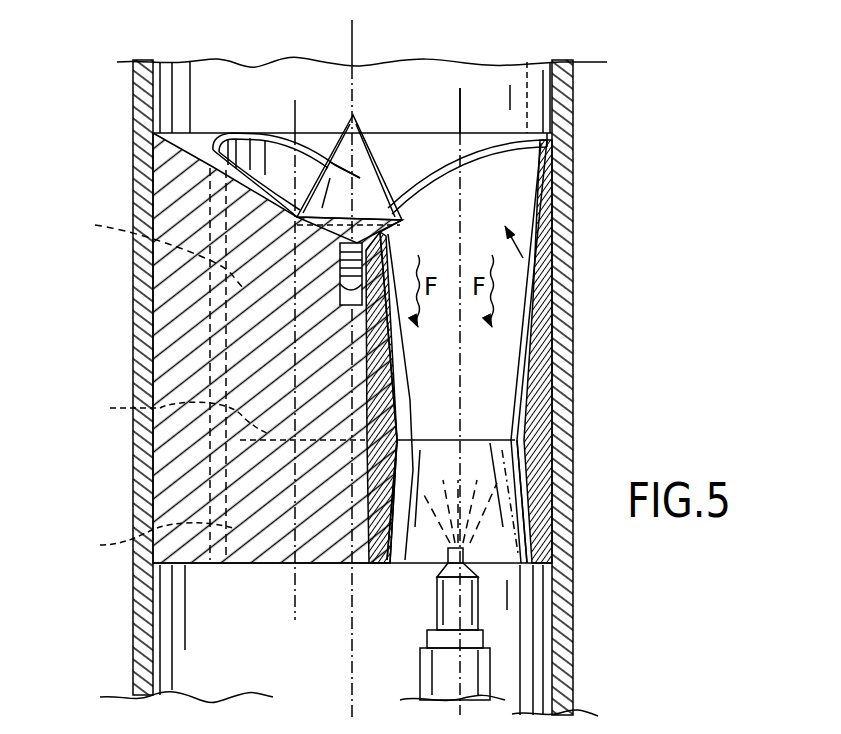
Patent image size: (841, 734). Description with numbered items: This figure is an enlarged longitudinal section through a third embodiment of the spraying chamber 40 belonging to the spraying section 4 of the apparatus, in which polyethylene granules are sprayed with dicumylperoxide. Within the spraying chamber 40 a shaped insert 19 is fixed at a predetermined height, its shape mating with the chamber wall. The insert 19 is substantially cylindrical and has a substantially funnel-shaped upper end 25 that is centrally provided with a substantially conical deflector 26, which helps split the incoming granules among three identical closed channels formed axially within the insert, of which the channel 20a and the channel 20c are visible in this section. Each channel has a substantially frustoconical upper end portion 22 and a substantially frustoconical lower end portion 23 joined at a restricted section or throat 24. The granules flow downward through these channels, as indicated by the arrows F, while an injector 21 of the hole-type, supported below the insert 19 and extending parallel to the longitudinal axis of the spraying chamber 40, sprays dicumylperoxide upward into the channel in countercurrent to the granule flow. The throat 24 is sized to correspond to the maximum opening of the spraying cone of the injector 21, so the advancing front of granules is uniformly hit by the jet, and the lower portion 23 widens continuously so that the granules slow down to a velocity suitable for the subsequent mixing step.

The spraying section 4 is at (627, 176).
The shaped insert 19 is at (176, 480).
The closed channel 20a is at (480, 168).
The closed channel 20c is at (248, 128).
The injector 21 is at (418, 679).
The upper end portion 22 is at (614, 283).
The lower end portion 23 is at (603, 455).
The restricted section or throat 24 is at (607, 392).
The funnel-shaped upper end 25 is at (330, 110).
The conical deflector 26 is at (364, 161).
The spraying chamber 40 is at (126, 371).